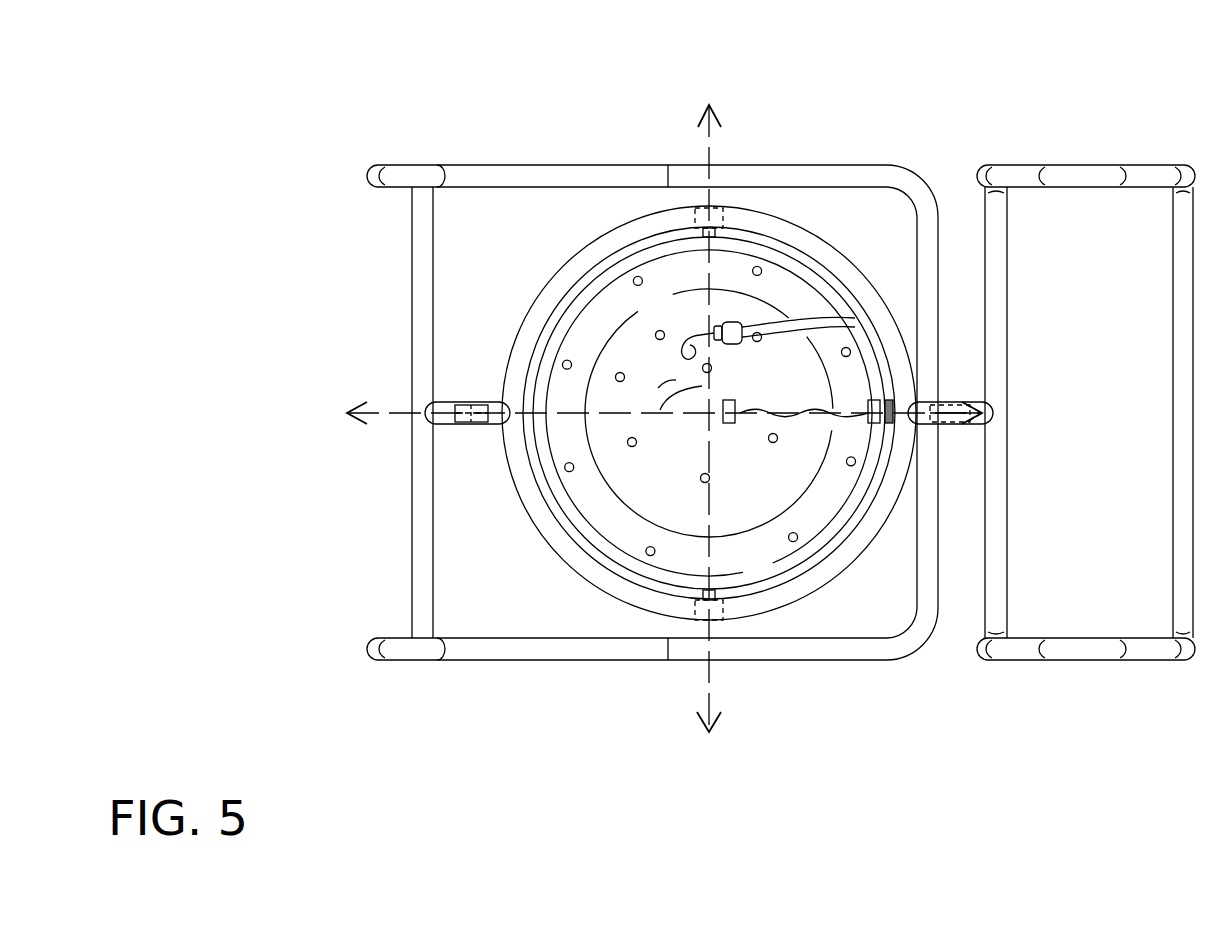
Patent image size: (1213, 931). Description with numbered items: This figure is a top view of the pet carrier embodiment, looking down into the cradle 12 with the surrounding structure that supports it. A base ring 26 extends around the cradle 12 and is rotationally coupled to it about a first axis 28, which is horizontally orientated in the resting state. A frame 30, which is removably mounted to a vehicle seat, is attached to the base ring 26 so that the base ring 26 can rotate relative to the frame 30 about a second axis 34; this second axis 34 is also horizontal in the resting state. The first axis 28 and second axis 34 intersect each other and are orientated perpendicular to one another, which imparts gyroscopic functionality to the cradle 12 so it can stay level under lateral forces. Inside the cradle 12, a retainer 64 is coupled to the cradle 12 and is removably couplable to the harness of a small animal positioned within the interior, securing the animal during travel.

The cradle 12 is at (800, 502).
The base ring 26 is at (797, 238).
The first axis 28 is at (710, 158).
The frame 30 is at (542, 639).
The second axis 34 is at (408, 413).
The retainer 64 is at (813, 326).